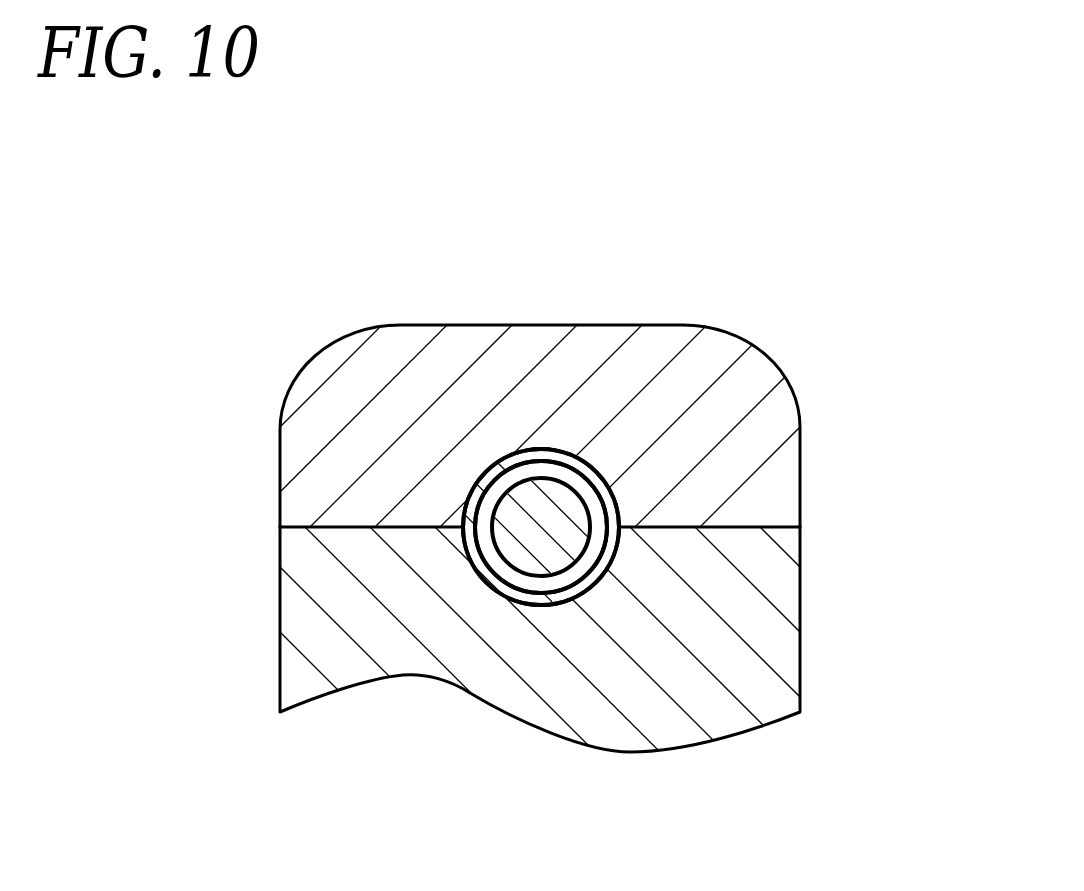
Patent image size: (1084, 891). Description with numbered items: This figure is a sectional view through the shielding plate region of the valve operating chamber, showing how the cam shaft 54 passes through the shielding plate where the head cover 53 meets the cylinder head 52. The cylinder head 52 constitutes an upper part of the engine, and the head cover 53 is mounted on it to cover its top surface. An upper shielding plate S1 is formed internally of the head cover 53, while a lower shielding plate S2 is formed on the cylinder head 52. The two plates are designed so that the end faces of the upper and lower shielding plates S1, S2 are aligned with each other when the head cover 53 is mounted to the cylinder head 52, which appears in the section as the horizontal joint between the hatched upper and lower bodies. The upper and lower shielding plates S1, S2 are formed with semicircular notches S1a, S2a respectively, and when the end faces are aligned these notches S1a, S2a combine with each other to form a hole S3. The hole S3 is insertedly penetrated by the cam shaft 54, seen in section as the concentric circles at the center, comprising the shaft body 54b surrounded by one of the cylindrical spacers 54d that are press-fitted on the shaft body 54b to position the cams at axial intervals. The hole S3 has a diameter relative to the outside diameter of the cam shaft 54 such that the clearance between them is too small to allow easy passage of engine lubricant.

The cylinder head 52 is at (804, 669).
The head cover 53 is at (733, 328).
The cam shaft 54 is at (500, 592).
The shaft body 54b is at (556, 527).
The cylindrical spacer 54d is at (620, 510).
The upper shielding plate S1 is at (535, 390).
The semicircular notch S1a is at (562, 505).
The lower shielding plate S2 is at (398, 601).
The semicircular notch S2a is at (553, 577).
The hole S3 is at (472, 520).